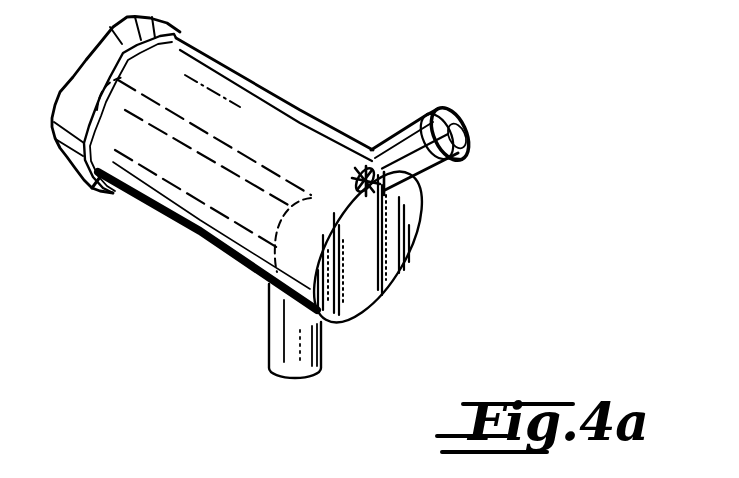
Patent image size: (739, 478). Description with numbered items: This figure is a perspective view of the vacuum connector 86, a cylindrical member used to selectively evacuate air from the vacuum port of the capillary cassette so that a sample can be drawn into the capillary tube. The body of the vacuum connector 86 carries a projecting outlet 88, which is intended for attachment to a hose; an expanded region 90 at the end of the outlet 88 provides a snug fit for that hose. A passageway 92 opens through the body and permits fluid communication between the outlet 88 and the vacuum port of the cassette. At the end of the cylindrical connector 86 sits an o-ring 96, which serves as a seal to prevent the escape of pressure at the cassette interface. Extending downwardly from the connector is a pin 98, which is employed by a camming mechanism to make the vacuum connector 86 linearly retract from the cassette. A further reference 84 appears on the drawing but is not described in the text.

The flange collar 84 is at (108, 191).
The vacuum connector 86 is at (152, 251).
The projecting outlet 88 is at (417, 150).
The expanded region 90 is at (466, 161).
The passageway 92 is at (352, 127).
The o-ring 96 is at (174, 37).
The pin 98 is at (283, 342).